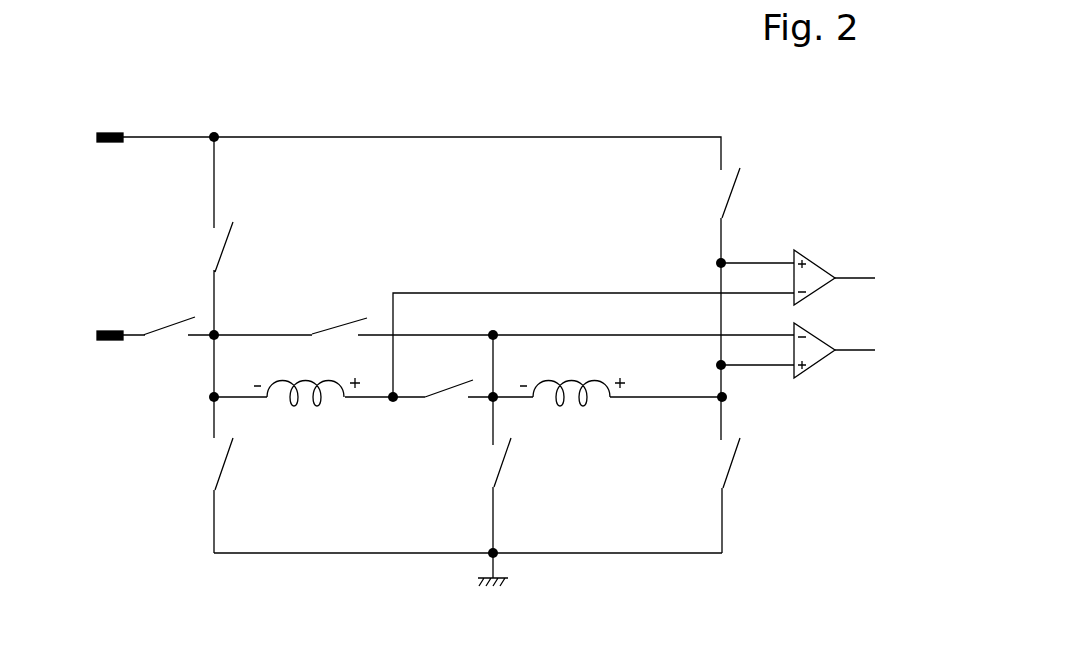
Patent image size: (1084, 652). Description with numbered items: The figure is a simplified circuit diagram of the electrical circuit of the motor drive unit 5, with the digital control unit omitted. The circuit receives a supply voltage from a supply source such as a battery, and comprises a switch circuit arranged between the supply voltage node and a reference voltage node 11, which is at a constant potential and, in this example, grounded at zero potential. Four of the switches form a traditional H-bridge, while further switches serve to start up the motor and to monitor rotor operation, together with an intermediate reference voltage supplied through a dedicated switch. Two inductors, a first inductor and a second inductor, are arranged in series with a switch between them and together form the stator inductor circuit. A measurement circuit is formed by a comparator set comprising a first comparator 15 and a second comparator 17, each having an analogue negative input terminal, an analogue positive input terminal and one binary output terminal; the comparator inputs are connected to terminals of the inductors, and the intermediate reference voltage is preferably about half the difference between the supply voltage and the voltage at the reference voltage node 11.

The motor drive unit 5 is at (803, 458).
The reference voltage node 11 is at (508, 582).
The first comparator 15 is at (817, 273).
The second comparator 17 is at (817, 345).